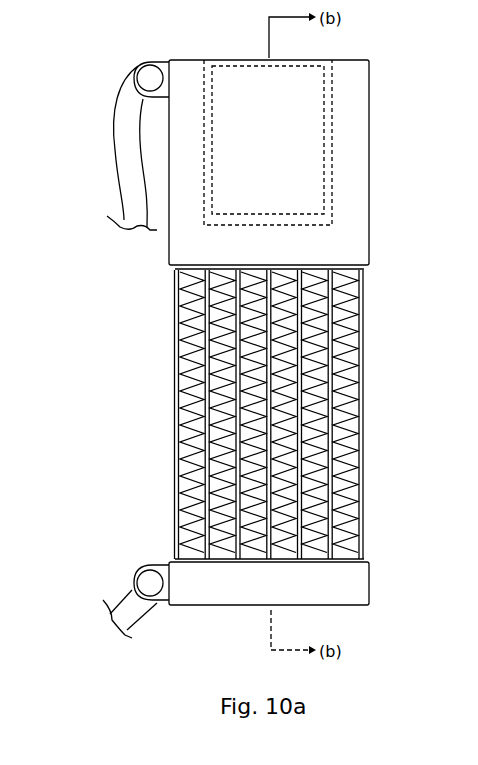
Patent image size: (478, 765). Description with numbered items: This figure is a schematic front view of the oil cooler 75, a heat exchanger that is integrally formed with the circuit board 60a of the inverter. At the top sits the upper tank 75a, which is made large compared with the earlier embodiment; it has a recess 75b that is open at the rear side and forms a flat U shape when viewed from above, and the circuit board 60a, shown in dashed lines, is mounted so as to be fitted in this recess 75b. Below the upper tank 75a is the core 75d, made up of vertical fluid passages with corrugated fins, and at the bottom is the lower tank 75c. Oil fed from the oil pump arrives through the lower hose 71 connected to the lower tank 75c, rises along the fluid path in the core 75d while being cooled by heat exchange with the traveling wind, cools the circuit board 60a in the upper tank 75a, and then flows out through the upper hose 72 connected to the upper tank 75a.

The circuit board 60a is at (332, 128).
The lower hose 71 is at (125, 597).
The upper hose 72 is at (118, 150).
The oil cooler 75 is at (376, 292).
The upper tank 75a is at (369, 150).
The recess 75b is at (204, 206).
The lower tank 75c is at (369, 582).
The core 75d is at (353, 402).